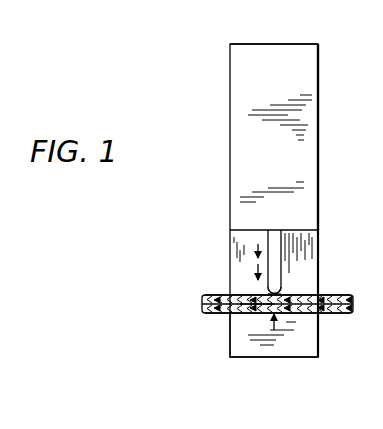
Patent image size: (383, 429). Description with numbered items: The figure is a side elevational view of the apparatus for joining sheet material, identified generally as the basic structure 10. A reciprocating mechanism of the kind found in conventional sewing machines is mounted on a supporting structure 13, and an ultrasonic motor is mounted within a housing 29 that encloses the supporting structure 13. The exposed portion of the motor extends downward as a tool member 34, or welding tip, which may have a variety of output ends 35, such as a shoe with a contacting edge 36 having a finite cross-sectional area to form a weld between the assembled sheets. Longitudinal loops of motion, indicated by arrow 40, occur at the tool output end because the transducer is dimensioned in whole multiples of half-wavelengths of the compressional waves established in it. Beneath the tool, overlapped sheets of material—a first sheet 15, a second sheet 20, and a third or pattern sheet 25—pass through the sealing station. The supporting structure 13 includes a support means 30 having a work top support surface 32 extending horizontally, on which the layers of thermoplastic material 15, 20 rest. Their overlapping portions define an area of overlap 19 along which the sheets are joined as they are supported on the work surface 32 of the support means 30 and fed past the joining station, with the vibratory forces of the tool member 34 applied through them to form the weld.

The basic structure for joining sheet material 10 is at (327, 93).
The supporting structure 13 is at (272, 44).
The housing 29 is at (318, 142).
The tool member 34 is at (278, 243).
The output end 35 is at (283, 288).
The contacting edge 36 is at (285, 297).
The arrow 40 is at (256, 262).
The second sheet 20 is at (202, 303).
The third sheet 25 is at (212, 296).
The first sheet 15 is at (207, 312).
The work top support surface 32 is at (258, 311).
The support means 30 is at (316, 354).
The area of overlap 19 is at (274, 330).